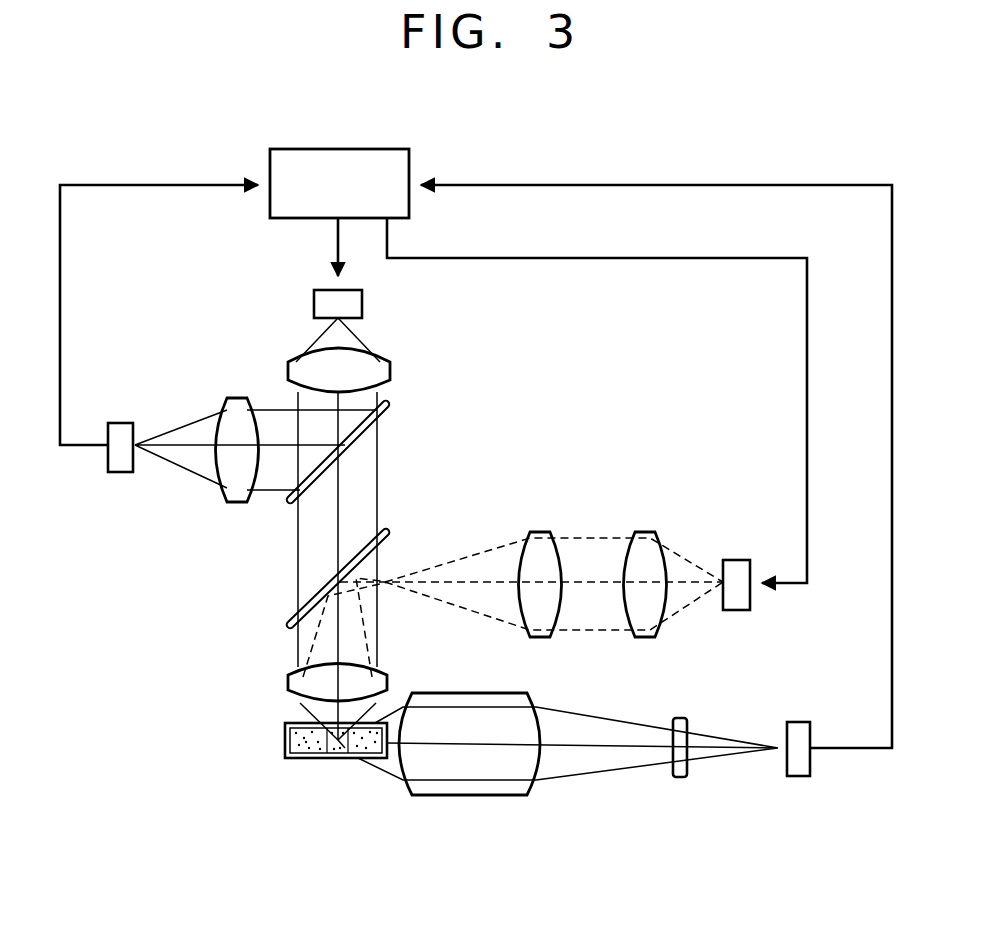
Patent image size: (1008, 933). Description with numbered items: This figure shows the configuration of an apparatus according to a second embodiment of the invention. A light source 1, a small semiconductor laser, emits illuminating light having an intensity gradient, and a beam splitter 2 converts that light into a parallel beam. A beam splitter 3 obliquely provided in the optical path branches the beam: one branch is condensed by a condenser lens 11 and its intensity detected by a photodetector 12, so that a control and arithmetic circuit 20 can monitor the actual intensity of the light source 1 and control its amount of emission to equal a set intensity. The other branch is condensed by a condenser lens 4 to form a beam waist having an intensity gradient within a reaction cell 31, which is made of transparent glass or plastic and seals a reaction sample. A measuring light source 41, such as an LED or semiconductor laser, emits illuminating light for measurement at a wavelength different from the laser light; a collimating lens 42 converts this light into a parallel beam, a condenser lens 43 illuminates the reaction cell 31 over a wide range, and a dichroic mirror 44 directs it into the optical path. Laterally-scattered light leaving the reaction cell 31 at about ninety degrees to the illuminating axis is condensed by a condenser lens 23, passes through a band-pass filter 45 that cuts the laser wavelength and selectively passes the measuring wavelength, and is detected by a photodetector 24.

The control and arithmetic circuit 20 is at (372, 158).
The light source 1 is at (355, 307).
The beam splitter 2 is at (383, 370).
The beam splitter 3 is at (390, 401).
The condenser lens 11 is at (237, 397).
The photodetector 12 is at (120, 430).
The dichroic mirror 44 is at (388, 528).
The condenser lens 43 is at (546, 532).
The collimating lens 42 is at (651, 532).
The measuring light source 41 is at (738, 560).
The condenser lens 4 is at (387, 682).
The reaction cell 31 is at (285, 745).
The condenser lens 23 is at (452, 797).
The band-pass filter 45 is at (680, 778).
The photodetector 24 is at (800, 777).